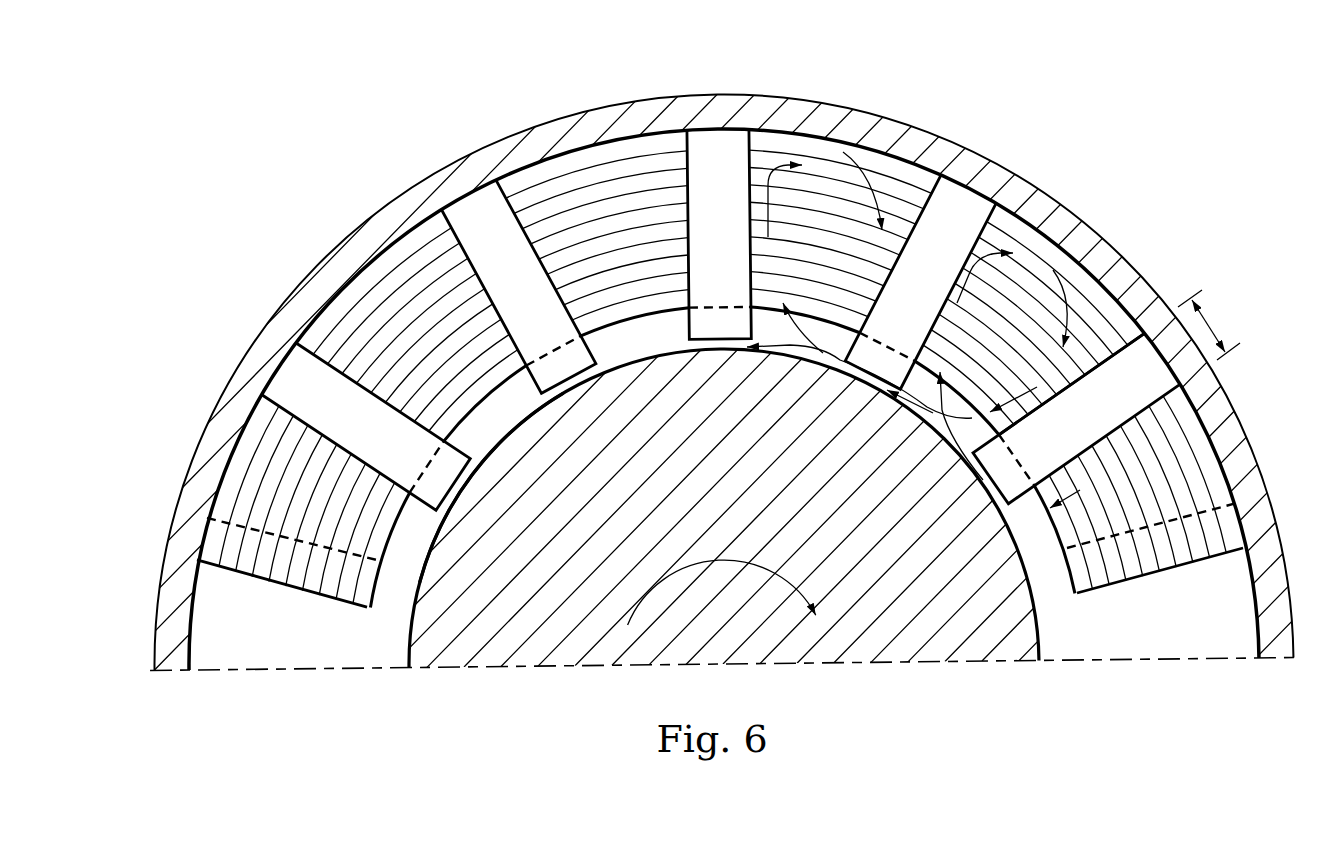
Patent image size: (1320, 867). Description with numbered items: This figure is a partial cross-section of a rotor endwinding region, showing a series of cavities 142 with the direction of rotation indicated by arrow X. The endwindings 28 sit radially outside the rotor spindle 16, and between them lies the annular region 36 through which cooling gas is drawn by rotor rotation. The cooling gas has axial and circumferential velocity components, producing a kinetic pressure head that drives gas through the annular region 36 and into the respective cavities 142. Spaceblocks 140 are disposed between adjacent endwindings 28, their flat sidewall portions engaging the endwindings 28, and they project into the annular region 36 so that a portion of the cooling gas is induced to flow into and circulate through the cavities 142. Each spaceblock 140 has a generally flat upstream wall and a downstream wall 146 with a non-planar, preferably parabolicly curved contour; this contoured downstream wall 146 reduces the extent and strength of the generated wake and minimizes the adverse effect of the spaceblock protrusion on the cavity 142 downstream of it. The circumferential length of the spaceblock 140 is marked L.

The rotor spindle 16 is at (535, 650).
The endwindings 28 is at (608, 328).
The annular region 36 is at (495, 428).
The spaceblock 140 is at (716, 145).
The cavities 142 is at (590, 182).
The downstream wall 146 is at (1126, 325).